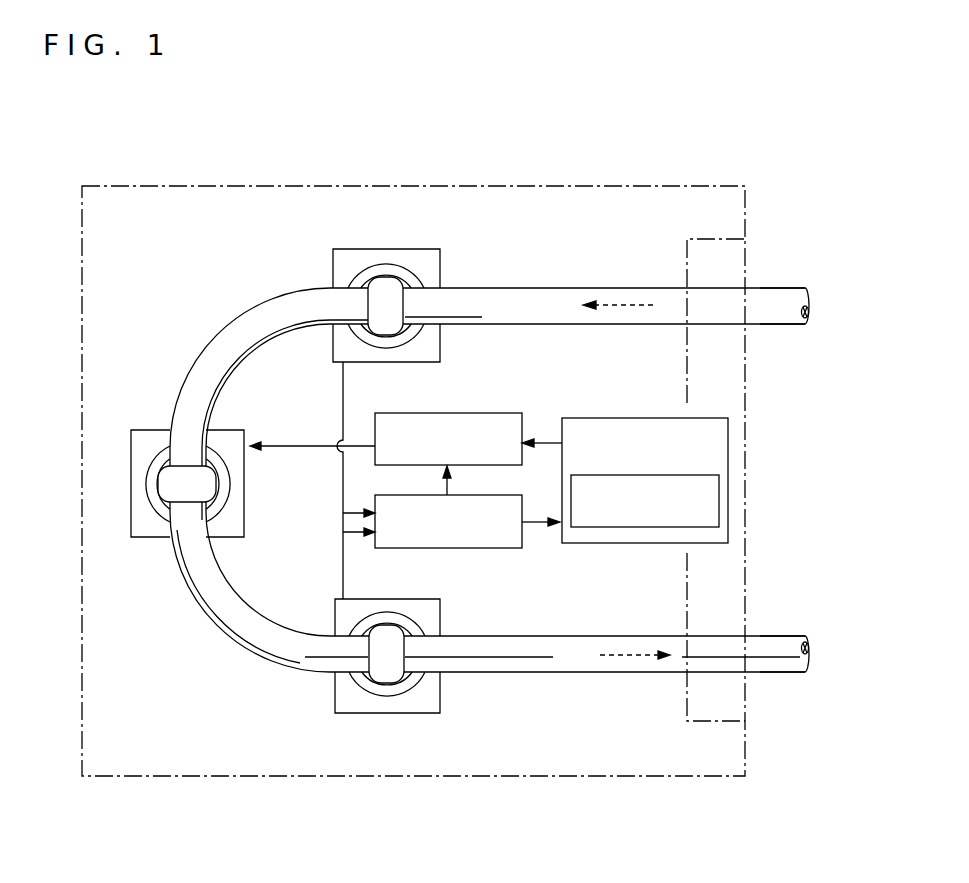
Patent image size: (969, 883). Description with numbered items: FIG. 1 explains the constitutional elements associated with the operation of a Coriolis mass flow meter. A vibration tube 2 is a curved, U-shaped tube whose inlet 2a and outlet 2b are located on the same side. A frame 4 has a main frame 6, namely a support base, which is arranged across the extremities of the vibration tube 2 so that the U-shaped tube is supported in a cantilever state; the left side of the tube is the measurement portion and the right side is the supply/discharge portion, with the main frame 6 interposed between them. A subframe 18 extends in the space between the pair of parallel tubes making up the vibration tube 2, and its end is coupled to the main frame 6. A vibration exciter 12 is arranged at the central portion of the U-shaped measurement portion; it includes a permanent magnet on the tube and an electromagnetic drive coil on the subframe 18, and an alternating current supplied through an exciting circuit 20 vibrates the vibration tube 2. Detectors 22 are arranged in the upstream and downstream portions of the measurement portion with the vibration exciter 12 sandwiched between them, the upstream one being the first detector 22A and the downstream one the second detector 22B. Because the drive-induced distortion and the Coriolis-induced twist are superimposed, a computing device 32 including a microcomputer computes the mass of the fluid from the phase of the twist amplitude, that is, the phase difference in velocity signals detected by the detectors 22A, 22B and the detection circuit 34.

The vibration tube 2 is at (489, 470).
The inlet 2a is at (768, 302).
The outlet 2b is at (777, 660).
The frame 4 is at (764, 480).
The main frame 6 is at (725, 563).
The vibration exciter 12 is at (135, 521).
The subframe 18 is at (603, 776).
The exciting circuit 20 is at (466, 413).
The detectors 22 is at (383, 474).
The first detector 22A is at (395, 249).
The second detector 22B is at (368, 704).
The computing device 32 is at (594, 418).
The detection circuit 34 is at (478, 549).